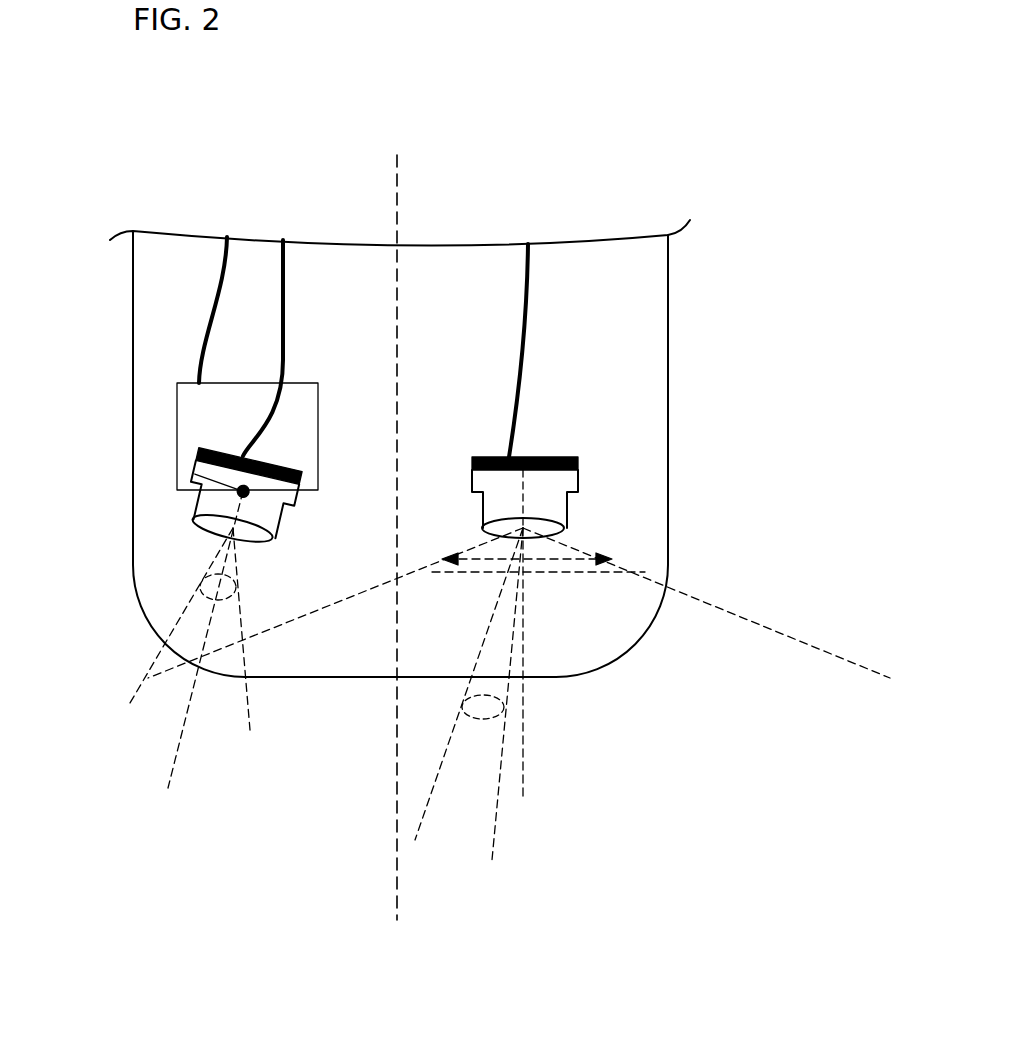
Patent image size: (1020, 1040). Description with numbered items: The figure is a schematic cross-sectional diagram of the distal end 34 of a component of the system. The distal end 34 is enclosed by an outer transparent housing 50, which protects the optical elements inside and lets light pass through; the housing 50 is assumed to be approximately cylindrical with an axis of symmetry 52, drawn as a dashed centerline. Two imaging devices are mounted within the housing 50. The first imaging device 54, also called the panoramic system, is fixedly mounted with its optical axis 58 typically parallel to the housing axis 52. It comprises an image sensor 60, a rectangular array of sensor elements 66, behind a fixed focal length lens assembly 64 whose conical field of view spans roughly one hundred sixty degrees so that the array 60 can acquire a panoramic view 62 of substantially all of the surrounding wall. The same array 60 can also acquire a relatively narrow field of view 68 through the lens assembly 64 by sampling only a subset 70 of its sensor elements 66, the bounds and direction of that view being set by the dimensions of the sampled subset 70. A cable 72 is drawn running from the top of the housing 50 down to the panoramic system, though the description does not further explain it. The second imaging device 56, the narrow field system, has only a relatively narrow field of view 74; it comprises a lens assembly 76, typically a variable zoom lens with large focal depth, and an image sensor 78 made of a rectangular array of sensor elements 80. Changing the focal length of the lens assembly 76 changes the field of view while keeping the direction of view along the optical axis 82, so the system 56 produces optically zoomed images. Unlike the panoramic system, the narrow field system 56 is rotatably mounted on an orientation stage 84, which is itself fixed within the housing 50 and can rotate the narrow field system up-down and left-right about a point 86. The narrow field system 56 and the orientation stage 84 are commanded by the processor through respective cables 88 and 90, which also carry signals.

The distal end 34 is at (785, 341).
The outer transparent housing 50 is at (669, 260).
The axis of symmetry 52 is at (397, 170).
The first imaging device 54 is at (567, 507).
The second imaging device 56 is at (197, 508).
The optical axis 58 is at (523, 692).
The image sensor 60 is at (575, 456).
The panoramic view 62 is at (570, 573).
The fixed focal length lens assembly 64 is at (482, 530).
The sensor elements 66 is at (602, 205).
The narrow field of view 68 is at (480, 720).
The subset of sensor elements 70 is at (580, 485).
The cable 72 is at (530, 293).
The narrow field of view 74 is at (205, 582).
The lens assembly 76 is at (197, 522).
The image sensor 78 is at (217, 450).
The sensor elements 80 is at (136, 211).
The optical axis 82 is at (173, 758).
The orientation stage 84 is at (175, 413).
The point 86 is at (202, 478).
The cable 88 is at (287, 295).
The cable 90 is at (217, 287).